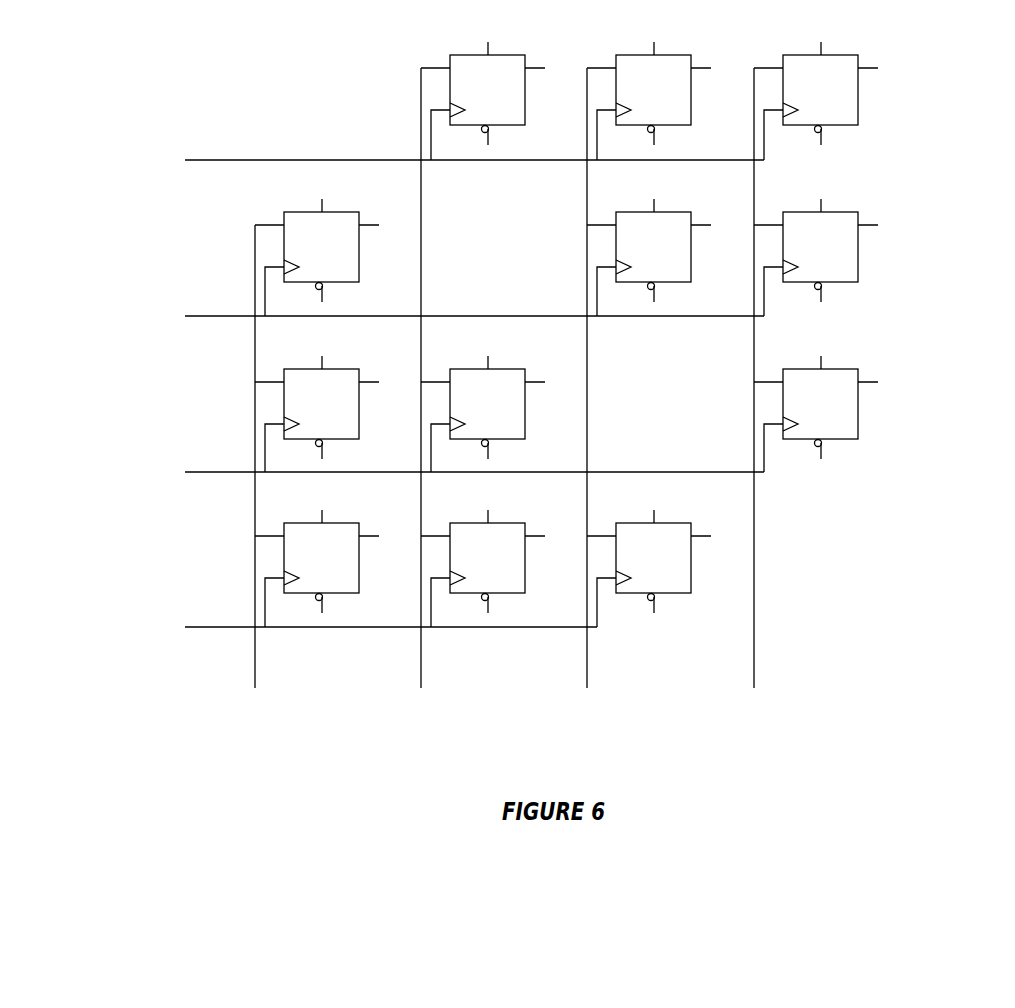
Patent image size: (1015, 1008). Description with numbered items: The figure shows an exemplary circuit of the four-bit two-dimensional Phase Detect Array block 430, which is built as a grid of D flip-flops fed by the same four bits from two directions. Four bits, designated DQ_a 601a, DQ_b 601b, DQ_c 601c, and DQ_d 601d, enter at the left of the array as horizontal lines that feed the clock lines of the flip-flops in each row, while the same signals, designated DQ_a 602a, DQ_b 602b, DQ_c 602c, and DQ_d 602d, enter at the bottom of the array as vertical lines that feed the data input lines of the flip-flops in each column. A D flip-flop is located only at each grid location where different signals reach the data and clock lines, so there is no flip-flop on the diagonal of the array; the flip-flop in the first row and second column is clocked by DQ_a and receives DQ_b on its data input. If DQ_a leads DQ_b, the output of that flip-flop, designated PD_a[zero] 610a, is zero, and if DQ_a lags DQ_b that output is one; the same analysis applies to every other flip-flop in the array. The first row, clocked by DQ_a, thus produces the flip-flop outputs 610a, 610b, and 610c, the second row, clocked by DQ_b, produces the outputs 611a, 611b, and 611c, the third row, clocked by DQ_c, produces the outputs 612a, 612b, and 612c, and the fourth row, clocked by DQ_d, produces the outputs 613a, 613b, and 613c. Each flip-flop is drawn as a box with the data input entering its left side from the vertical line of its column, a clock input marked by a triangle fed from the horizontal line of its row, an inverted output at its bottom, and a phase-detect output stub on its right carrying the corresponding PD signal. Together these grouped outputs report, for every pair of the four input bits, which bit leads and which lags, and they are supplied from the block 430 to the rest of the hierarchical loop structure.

The 4-bits 2-D Phase Detect Array block 430 is at (900, 659).
The DQ_a clock line input 601a is at (448, 172).
The DQ_b clock line input 601b is at (448, 328).
The DQ_c clock line input 601c is at (448, 484).
The DQ_d clock line input 601d is at (364, 639).
The DQ_a data line input 602a is at (255, 482).
The DQ_b data line input 602b is at (424, 404).
The DQ_c data line input 602c is at (587, 404).
The DQ_d data line input 602d is at (757, 404).
The DFF output PD_a[0] 610a is at (504, 88).
The DFF output PD_a[1] 610b is at (670, 88).
The DFF output PD_a[2] 610c is at (837, 88).
The DFF output PD_b[0] 611a is at (338, 249).
The DFF output PD_b[1] 611b is at (670, 249).
The DFF output PD_b[2] 611c is at (837, 249).
The DFF output PD_c[0] 612a is at (337, 406).
The DFF output PD_c[1] 612b is at (503, 406).
The DFF output PD_c[2] 612c is at (836, 406).
The DFF output PD_d[0] 613a is at (338, 559).
The DFF output PD_d[1] 613b is at (504, 559).
The DFF output PD_d[2] 613c is at (670, 559).